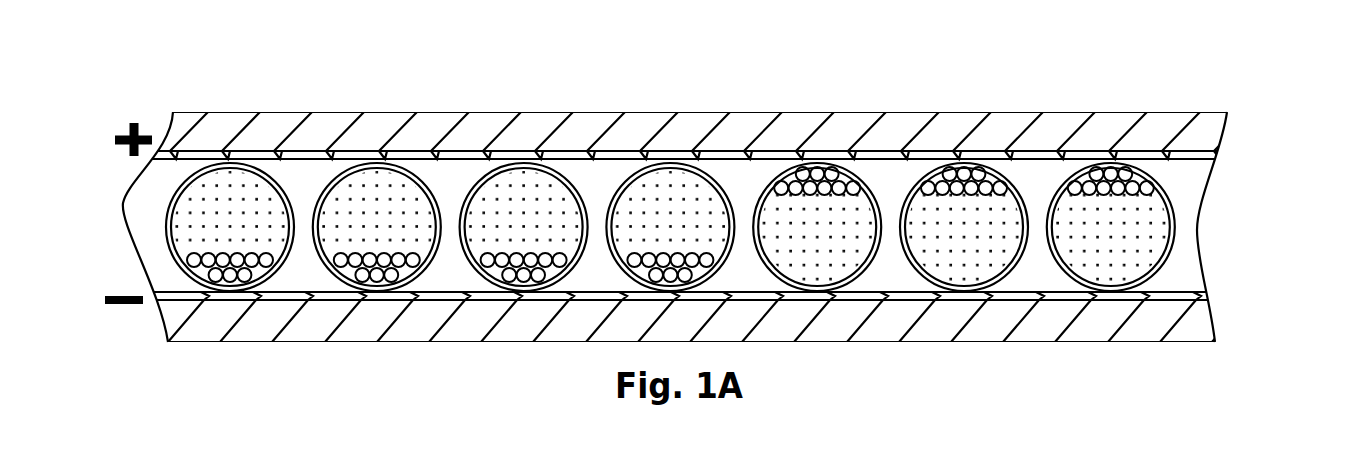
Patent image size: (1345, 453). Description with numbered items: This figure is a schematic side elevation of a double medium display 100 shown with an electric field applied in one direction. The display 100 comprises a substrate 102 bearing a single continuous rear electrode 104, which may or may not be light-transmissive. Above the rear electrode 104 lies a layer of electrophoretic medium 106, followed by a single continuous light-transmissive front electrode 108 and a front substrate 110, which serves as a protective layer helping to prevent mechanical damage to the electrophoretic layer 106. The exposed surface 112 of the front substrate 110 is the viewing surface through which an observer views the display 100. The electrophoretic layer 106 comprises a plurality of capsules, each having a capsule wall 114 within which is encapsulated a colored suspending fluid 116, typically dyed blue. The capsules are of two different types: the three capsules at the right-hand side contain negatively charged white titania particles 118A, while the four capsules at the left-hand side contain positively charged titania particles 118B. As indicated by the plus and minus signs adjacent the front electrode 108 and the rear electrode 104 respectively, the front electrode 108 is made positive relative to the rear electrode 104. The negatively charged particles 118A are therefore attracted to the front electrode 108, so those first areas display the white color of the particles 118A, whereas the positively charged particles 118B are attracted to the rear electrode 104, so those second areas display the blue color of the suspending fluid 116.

The double medium display 100 is at (1232, 216).
The substrate 102 is at (935, 318).
The rear electrode 104 is at (1065, 293).
The layer of electrophoretic medium 106 is at (146, 211).
The front electrode 108 is at (615, 156).
The front substrate 110 is at (987, 135).
The exposed surface 112 is at (890, 114).
The capsule wall 114 is at (273, 177).
The colored suspending fluid 116 is at (221, 197).
The negatively charged white titania particles 118A is at (1105, 178).
The positively charged titania particles 118B is at (368, 262).